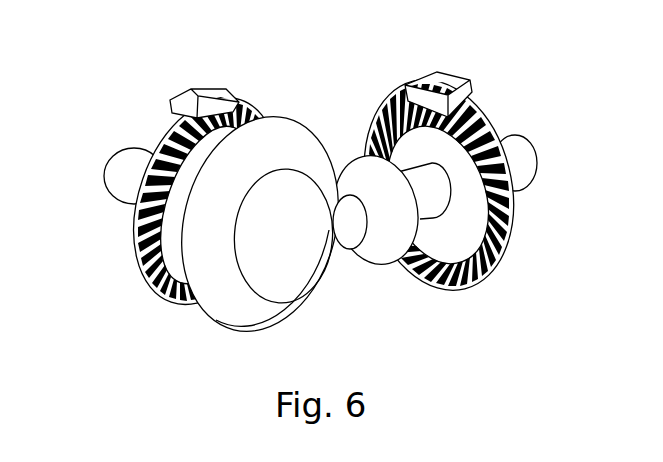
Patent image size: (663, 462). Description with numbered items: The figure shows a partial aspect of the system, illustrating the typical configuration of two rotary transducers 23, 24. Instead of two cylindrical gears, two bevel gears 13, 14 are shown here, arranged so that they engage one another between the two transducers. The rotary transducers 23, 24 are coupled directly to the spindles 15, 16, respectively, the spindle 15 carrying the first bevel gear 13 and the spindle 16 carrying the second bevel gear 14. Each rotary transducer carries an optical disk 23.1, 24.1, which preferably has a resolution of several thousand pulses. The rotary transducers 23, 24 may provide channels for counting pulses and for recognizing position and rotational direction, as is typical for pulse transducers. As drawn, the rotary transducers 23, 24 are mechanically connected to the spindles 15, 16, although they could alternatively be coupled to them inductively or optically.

The bevel gear 13 is at (240, 316).
The bevel gear 14 is at (387, 250).
The spindle 15 is at (112, 160).
The spindle 16 is at (513, 143).
The rotary transducer 23 is at (189, 182).
The optical disk 23.1 is at (131, 257).
The rotary transducer 24 is at (438, 191).
The optical disk 24.1 is at (465, 283).